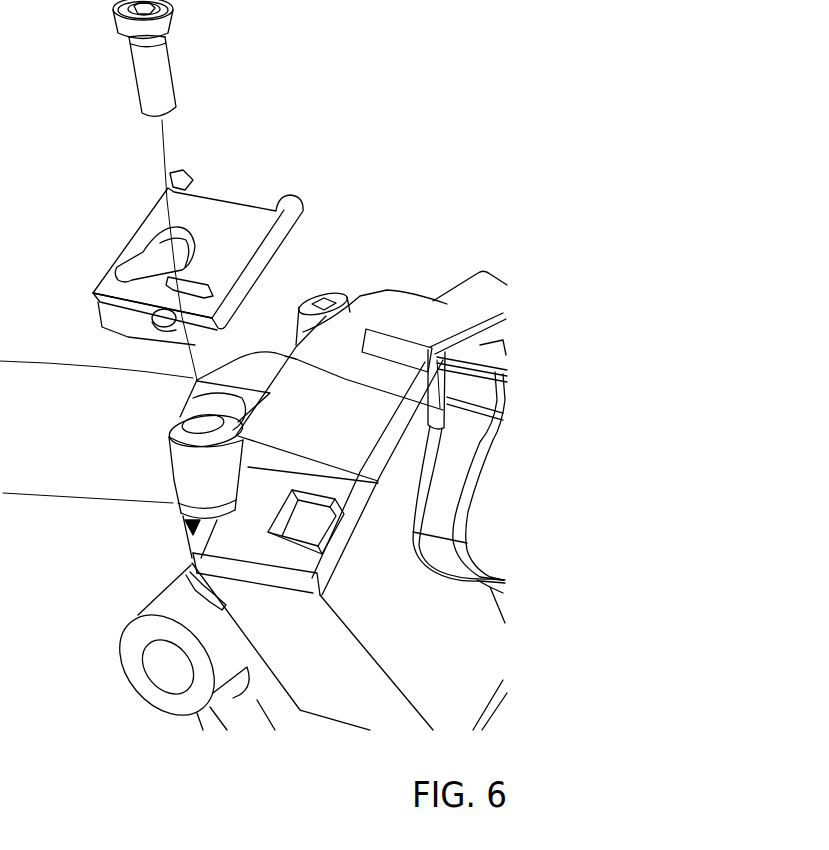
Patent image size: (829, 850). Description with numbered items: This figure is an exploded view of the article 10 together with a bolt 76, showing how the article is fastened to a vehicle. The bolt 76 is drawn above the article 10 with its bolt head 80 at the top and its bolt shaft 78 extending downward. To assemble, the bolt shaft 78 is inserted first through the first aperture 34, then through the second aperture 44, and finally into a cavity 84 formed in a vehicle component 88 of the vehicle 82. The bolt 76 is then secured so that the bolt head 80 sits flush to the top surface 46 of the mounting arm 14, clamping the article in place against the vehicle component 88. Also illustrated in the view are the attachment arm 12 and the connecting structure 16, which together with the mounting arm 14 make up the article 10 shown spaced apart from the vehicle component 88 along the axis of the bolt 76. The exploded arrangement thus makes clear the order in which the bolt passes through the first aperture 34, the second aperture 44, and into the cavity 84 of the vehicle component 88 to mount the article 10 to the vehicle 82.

The article 10 is at (87, 218).
The attachment arm 12 is at (296, 224).
The mounting arm 14 is at (175, 323).
The connecting structure 16 is at (122, 308).
The first aperture 34 is at (155, 260).
The second aperture 44 is at (222, 288).
The top surface 46 is at (190, 289).
The bolt 76 is at (120, 48).
The bolt shaft 78 is at (155, 82).
The bolt head 80 is at (120, 25).
The vehicle 82 is at (137, 553).
The cavity 84 is at (197, 427).
The vehicle component 88 is at (170, 483).